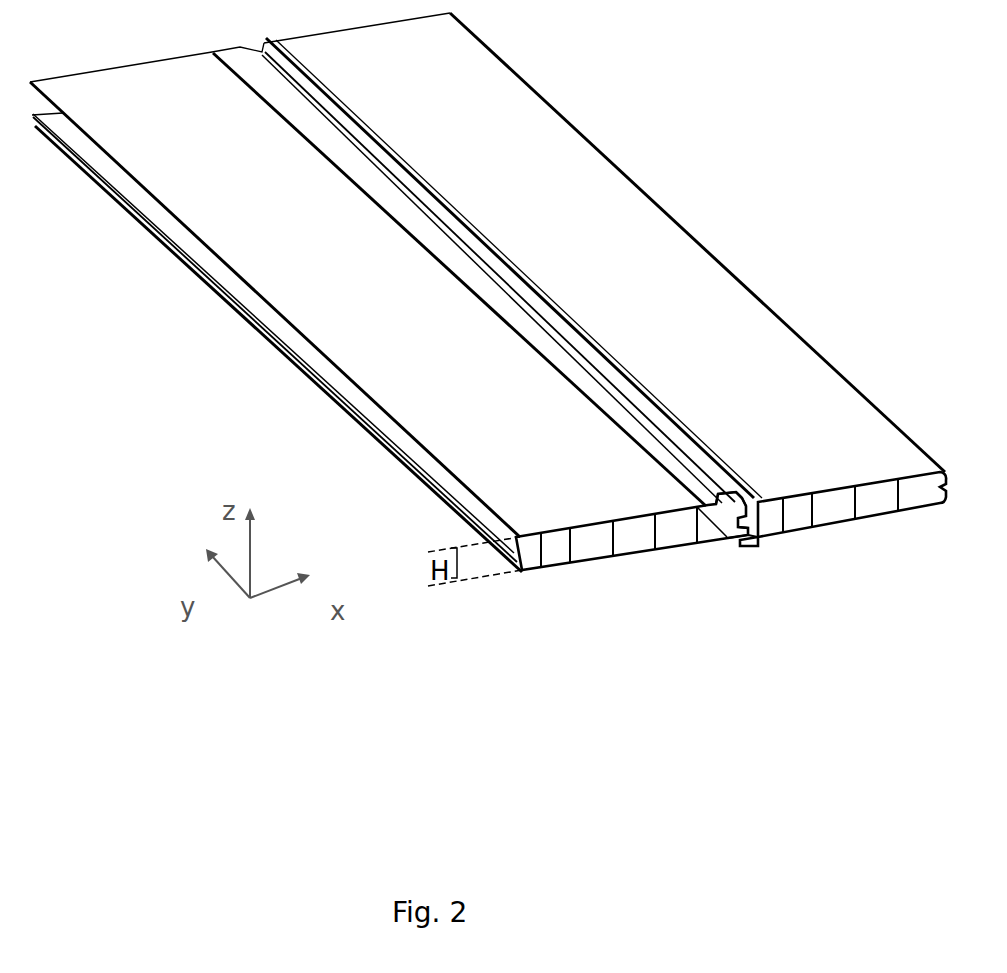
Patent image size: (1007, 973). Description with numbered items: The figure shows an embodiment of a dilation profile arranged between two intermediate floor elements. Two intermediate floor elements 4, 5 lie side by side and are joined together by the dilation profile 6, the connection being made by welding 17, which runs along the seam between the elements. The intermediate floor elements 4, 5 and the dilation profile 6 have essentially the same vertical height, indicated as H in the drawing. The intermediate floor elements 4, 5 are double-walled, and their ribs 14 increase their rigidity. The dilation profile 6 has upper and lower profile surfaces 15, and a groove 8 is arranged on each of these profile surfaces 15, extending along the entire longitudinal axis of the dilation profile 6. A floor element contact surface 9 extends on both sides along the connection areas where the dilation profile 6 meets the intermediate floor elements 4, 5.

The intermediate floor element 4 is at (808, 462).
The intermediate floor element 5 is at (597, 500).
The dilation profile 6 is at (741, 556).
The groove 8 is at (733, 495).
The floor element contact surface 9 is at (757, 498).
The rib 14 is at (540, 549).
The profile surface 15 is at (722, 498).
The welding 17 is at (621, 372).